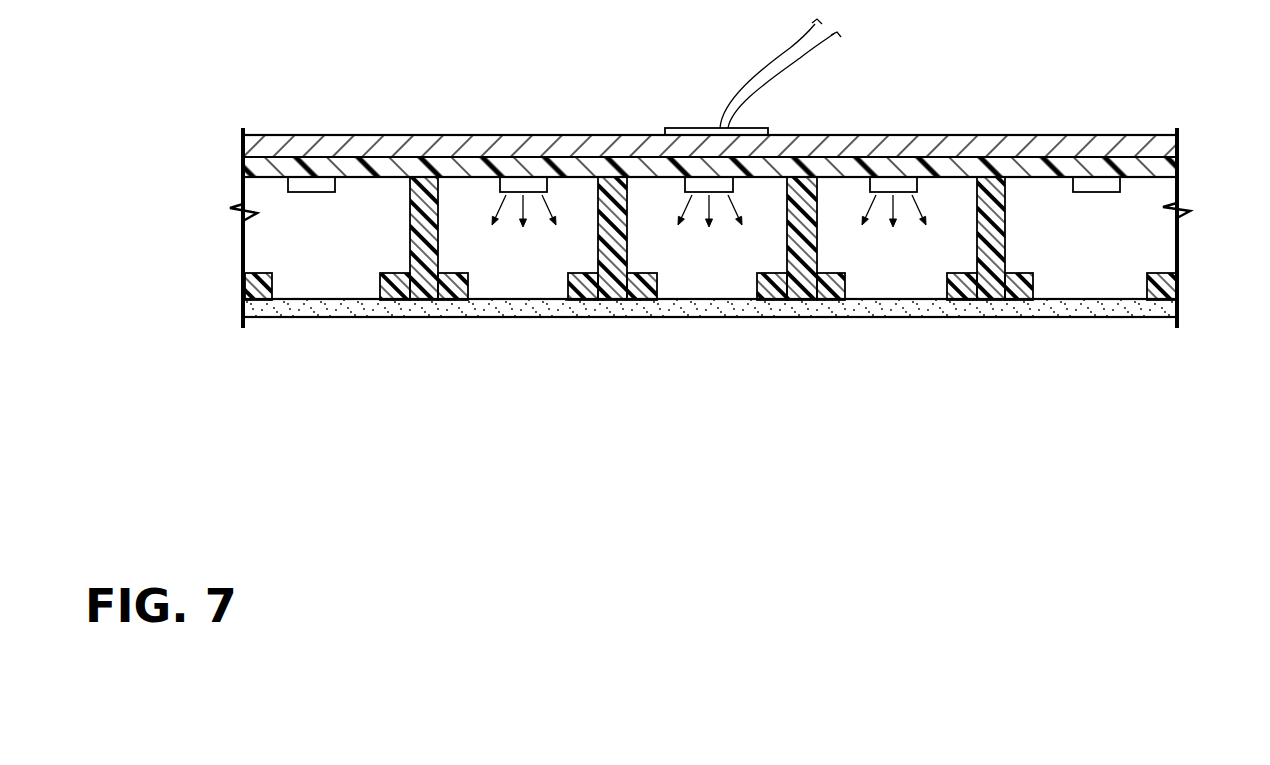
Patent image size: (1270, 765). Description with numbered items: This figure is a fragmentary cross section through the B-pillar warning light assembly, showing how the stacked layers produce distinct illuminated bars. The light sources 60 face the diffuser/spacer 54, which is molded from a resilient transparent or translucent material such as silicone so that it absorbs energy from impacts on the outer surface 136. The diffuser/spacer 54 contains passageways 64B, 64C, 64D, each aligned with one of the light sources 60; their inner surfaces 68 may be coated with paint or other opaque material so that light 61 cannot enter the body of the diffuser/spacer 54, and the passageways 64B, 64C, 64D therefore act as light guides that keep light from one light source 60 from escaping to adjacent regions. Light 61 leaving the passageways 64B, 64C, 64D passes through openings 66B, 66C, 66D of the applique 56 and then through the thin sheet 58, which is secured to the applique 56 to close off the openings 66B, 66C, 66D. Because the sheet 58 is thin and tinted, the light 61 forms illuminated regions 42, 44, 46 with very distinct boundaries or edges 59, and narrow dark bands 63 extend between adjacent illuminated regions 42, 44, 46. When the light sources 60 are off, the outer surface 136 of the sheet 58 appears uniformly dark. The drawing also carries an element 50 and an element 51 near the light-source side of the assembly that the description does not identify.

The illuminated region 42 is at (739, 404).
The illuminated region 44 is at (739, 404).
The illuminated region 46 is at (739, 404).
The first substrate 50 is at (1099, 130).
The electrical lead 51 is at (713, 120).
The diffuser/spacer 54 is at (627, 293).
The applique 56 is at (1115, 253).
The sheet 58 is at (739, 404).
The boundaries or edges 59 is at (410, 303).
The light source 60 is at (313, 190).
The light 61 is at (495, 212).
The dark band 63 is at (422, 317).
The passageway 64B is at (518, 233).
The passageway 64C is at (693, 237).
The passageway 64D is at (890, 237).
The opening 66B is at (540, 270).
The opening 66C is at (725, 267).
The opening 66D is at (934, 270).
The inner surface 68 is at (410, 248).
The outer surface 136 is at (1150, 317).